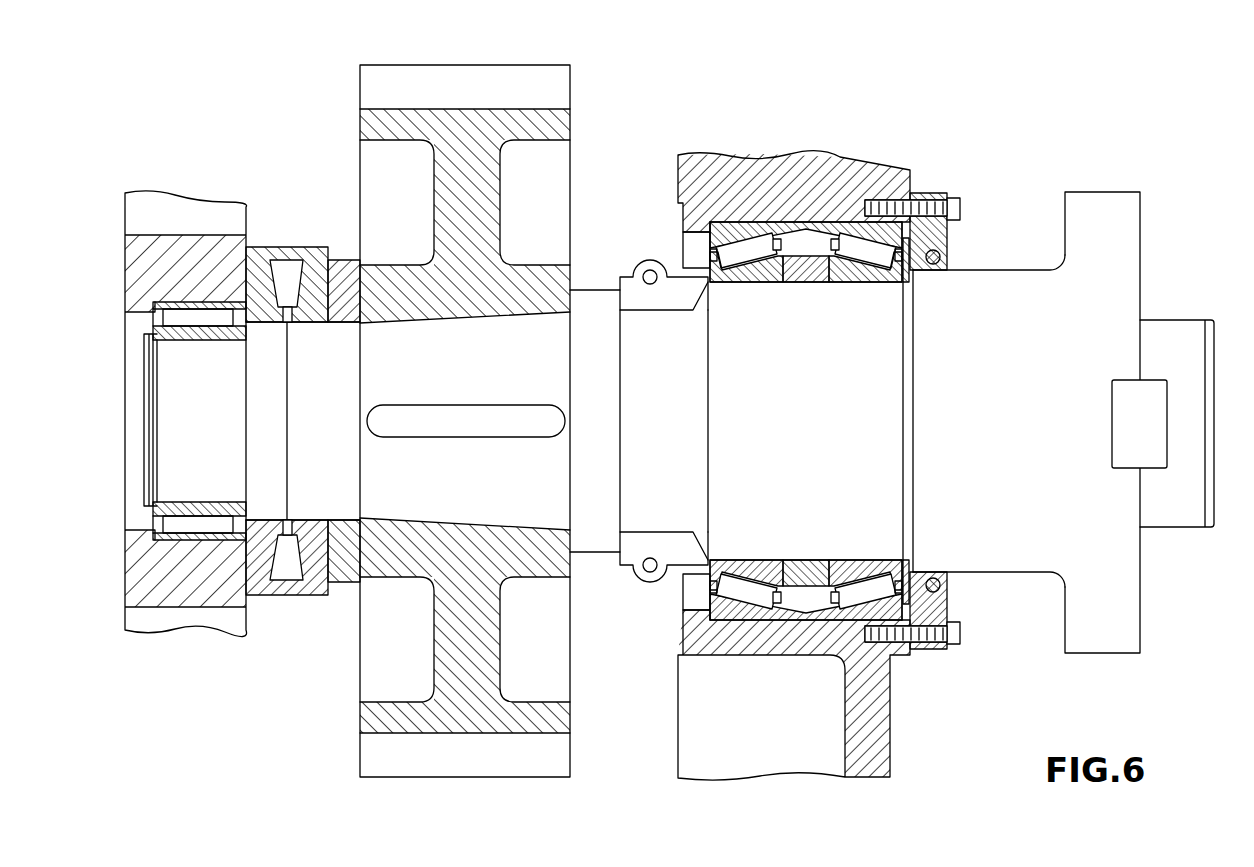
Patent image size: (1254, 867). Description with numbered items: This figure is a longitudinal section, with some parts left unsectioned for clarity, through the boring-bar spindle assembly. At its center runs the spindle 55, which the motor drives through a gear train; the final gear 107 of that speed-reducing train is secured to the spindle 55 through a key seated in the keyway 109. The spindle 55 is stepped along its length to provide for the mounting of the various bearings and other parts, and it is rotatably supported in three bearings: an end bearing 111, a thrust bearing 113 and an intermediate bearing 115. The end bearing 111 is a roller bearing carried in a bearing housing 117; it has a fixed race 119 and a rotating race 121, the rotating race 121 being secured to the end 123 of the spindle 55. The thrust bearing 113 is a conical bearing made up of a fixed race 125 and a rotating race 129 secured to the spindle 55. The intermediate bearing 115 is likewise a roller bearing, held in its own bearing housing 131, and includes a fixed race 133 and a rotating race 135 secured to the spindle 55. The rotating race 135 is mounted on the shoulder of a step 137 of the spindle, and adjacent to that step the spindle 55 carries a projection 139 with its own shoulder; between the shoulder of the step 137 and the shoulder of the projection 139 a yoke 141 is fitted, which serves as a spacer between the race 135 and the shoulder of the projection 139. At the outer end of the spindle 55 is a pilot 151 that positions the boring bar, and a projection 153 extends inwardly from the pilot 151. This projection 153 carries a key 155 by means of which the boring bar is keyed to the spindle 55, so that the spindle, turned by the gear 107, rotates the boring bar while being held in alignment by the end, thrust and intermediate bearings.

The spindle 55 is at (1000, 429).
The gear 107 is at (469, 80).
The keyway 109 is at (497, 439).
The end bearing 111 is at (114, 397).
The thrust bearing 113 is at (299, 239).
The intermediate bearing 115 is at (700, 246).
The bearing housing 117 is at (138, 212).
The fixed race 119 is at (156, 315).
The rotating race 121 is at (183, 333).
The end of spindle 123 is at (262, 466).
The fixed race 125 is at (260, 253).
The rotating race 129 is at (316, 592).
The bearing housing 131 is at (791, 166).
The fixed race 133 is at (806, 252).
The rotating race 135 is at (883, 276).
The step 137 is at (894, 532).
The projection 139 is at (612, 462).
The yoke 141 is at (661, 579).
The pilot 151 is at (1202, 326).
The projection 153 is at (1128, 606).
The key 155 is at (1133, 389).